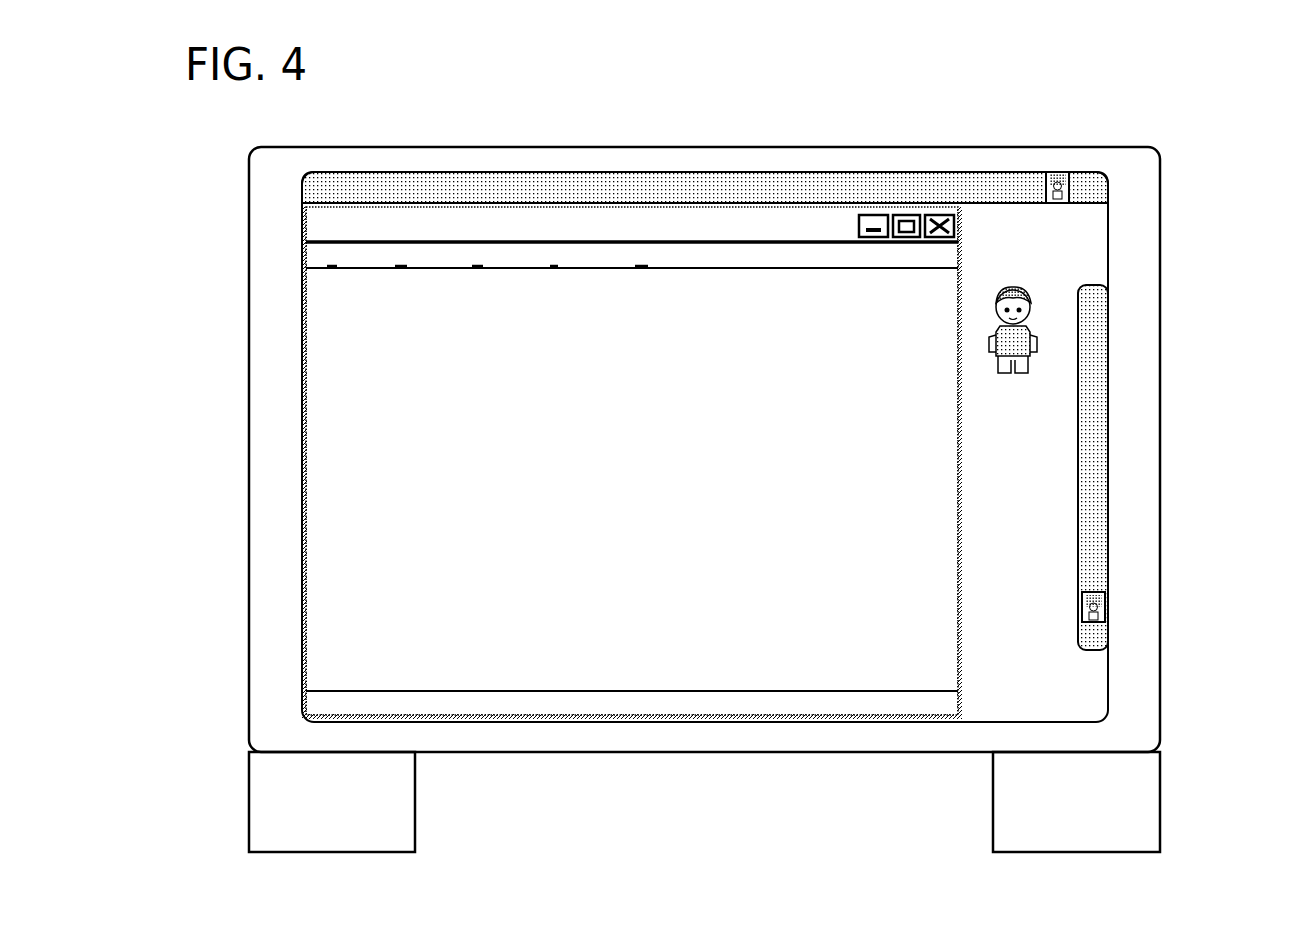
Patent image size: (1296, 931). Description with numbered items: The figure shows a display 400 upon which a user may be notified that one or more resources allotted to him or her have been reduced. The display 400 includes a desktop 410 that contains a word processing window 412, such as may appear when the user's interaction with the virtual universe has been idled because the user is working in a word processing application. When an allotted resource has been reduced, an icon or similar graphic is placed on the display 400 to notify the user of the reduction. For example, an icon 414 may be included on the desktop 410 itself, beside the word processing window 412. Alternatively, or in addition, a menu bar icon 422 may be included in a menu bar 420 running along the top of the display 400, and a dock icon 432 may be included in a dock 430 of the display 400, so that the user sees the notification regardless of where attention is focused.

The display 400 is at (949, 118).
The desktop 410 is at (1000, 240).
The word processing window 412 is at (363, 307).
The icon 414 is at (1033, 292).
The menu bar 420 is at (888, 185).
The menu bar icon 422 is at (1072, 175).
The dock 430 is at (1088, 398).
The dock icon 432 is at (1097, 603).